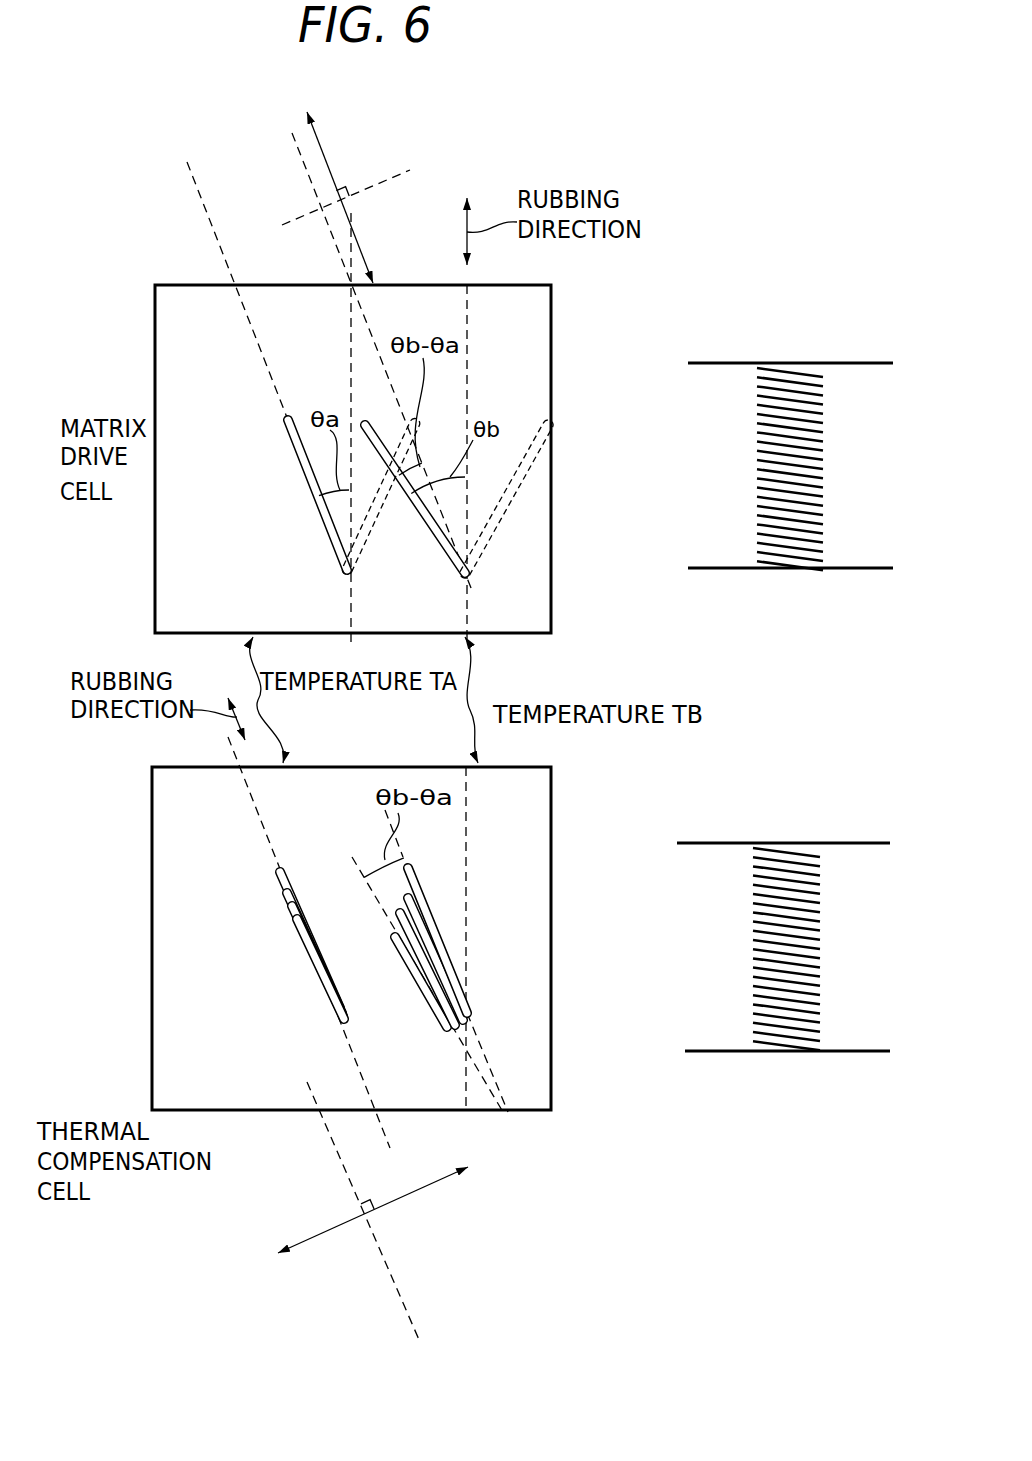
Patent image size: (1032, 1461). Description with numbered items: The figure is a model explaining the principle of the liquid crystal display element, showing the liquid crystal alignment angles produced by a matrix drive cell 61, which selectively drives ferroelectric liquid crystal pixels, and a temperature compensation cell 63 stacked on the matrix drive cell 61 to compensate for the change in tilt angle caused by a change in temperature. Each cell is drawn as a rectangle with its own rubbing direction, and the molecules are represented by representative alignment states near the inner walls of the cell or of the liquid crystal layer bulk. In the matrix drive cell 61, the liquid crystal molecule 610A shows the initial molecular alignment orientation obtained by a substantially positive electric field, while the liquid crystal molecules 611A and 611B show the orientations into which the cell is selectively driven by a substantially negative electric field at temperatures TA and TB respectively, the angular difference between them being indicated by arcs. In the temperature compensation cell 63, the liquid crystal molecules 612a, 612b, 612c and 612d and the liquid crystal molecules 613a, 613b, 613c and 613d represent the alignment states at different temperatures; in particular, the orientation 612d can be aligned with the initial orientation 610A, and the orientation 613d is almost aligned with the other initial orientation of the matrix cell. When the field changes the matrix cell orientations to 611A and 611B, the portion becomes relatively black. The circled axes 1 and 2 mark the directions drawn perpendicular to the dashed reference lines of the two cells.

The matrix drive cell 61 is at (155, 300).
The temperature compensation cell 63 is at (152, 782).
The liquid crystal molecule (initial molecular alignment orientation) 610A is at (303, 480).
The liquid crystal molecule (driven molecular alignment orientation) 611A is at (380, 527).
The liquid crystal molecule (driven molecular alignment orientation) 611B is at (462, 574).
The liquid crystal molecule of the temperature compensation cell 612a is at (282, 882).
The liquid crystal molecule of the temperature compensation cell 612b is at (290, 898).
The liquid crystal molecule of the temperature compensation cell 612c is at (296, 918).
The liquid crystal molecule of the temperature compensation cell 612d is at (312, 955).
The liquid crystal molecule of the temperature compensation cell 613a is at (412, 878).
The liquid crystal molecule of the temperature compensation cell 613b is at (417, 913).
The liquid crystal molecule of the temperature compensation cell 613c is at (410, 937).
The liquid crystal molecule of the temperature compensation cell 613d is at (417, 968).
The polarizer axis 1 is at (317, 137).
The polarizer axis 2 is at (442, 1182).